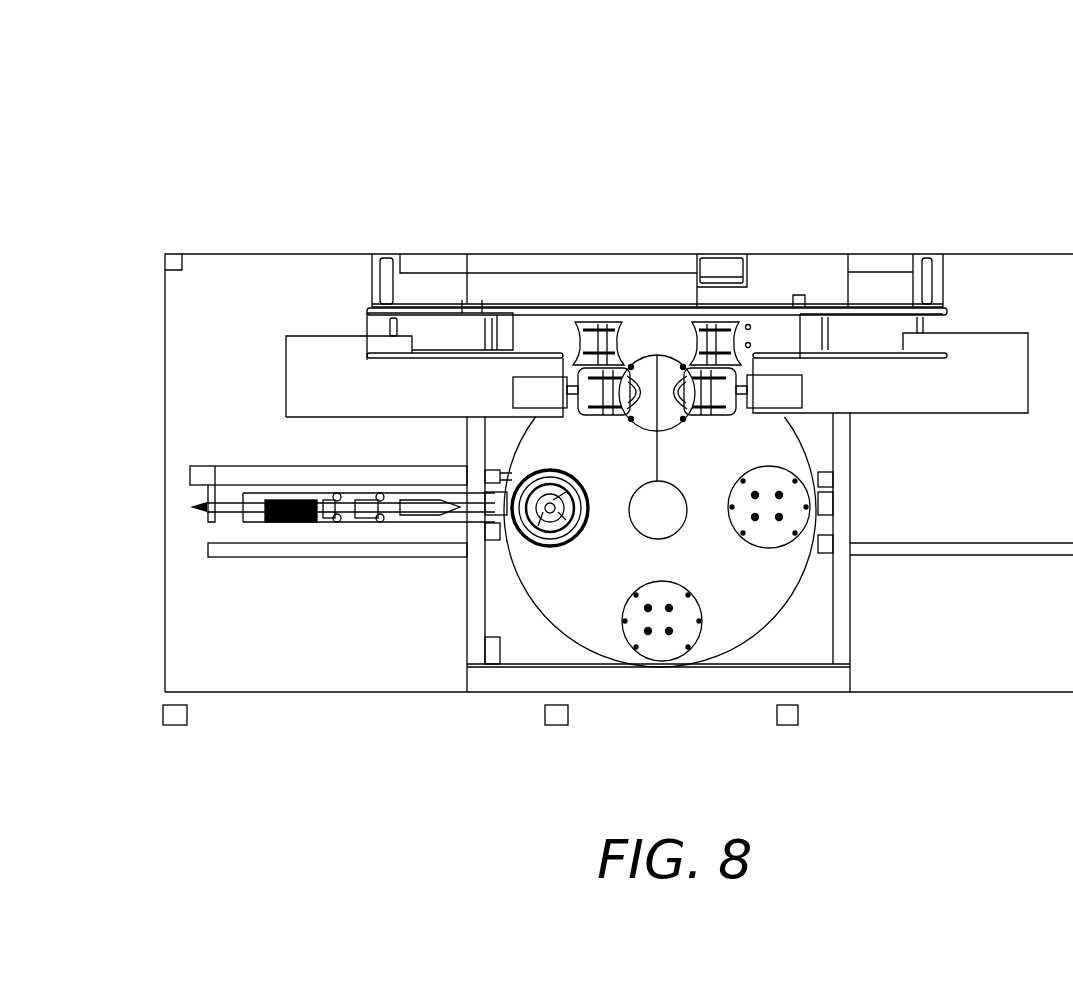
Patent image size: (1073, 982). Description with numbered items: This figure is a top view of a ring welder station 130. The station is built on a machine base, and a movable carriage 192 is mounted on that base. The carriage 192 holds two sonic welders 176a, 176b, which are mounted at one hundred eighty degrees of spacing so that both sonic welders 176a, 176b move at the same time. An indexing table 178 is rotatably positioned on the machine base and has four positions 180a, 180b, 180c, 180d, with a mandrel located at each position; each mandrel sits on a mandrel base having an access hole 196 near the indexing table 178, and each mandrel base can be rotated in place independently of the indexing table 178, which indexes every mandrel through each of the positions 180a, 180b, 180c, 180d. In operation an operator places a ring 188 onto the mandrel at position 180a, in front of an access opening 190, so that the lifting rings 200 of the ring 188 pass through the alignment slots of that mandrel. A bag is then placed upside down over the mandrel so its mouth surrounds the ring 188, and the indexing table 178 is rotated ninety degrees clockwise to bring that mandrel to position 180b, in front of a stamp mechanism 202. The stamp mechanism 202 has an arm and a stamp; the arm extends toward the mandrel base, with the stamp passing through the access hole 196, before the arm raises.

The ring welder station 130 is at (352, 157).
The sonic welder 176a is at (584, 390).
The sonic welder 176b is at (722, 392).
The indexing table 178 is at (727, 577).
The position 180a is at (627, 644).
The position 180b is at (507, 533).
The position 180c is at (640, 355).
The position 180d is at (787, 548).
The ring 188 is at (555, 477).
The access opening 190 is at (660, 693).
The movable carriage 192 is at (975, 365).
The access hole 196 is at (515, 473).
The lifting rings 200 is at (570, 545).
The stamp mechanism 202 is at (233, 505).